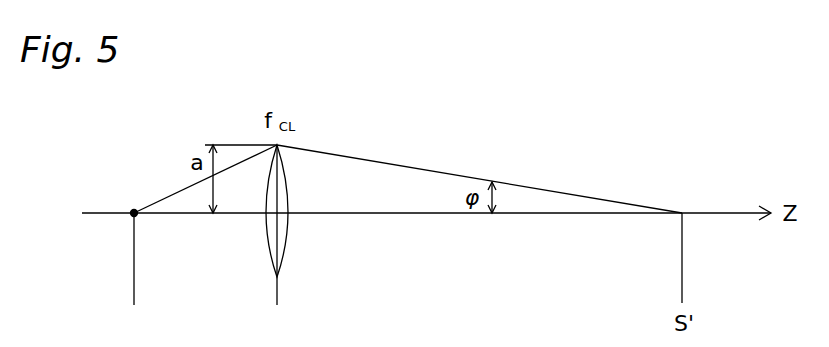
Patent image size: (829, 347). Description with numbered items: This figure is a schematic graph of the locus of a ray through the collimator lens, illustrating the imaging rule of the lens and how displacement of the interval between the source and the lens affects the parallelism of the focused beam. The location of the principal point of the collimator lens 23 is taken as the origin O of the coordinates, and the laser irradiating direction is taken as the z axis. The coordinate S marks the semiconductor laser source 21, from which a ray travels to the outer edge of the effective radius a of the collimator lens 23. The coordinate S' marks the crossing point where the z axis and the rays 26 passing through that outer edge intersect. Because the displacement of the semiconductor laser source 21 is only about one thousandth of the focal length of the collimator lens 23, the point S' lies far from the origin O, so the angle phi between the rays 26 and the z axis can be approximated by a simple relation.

The semiconductor laser source 21 is at (134, 212).
The collimator lens 23 is at (285, 168).
The rays 26 is at (420, 168).